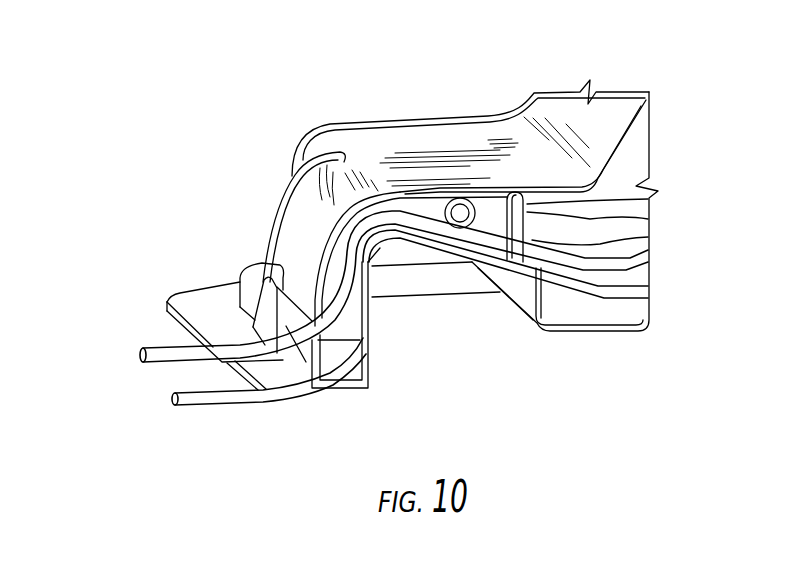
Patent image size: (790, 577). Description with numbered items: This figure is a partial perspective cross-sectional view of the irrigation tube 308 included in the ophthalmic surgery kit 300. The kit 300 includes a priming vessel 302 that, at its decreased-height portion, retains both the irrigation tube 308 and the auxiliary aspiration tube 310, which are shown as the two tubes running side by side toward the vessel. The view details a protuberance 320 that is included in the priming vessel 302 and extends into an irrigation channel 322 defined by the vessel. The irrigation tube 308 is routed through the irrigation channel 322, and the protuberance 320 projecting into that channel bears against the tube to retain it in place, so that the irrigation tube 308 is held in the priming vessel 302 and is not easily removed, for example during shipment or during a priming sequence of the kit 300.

The ophthalmic surgery kit 300 is at (680, 288).
The priming vessel 302 is at (648, 218).
The irrigation tube 308 is at (193, 400).
The auxiliary aspiration tube 310 is at (157, 363).
The protuberance 320 is at (460, 197).
The irrigation channel 322 is at (491, 224).